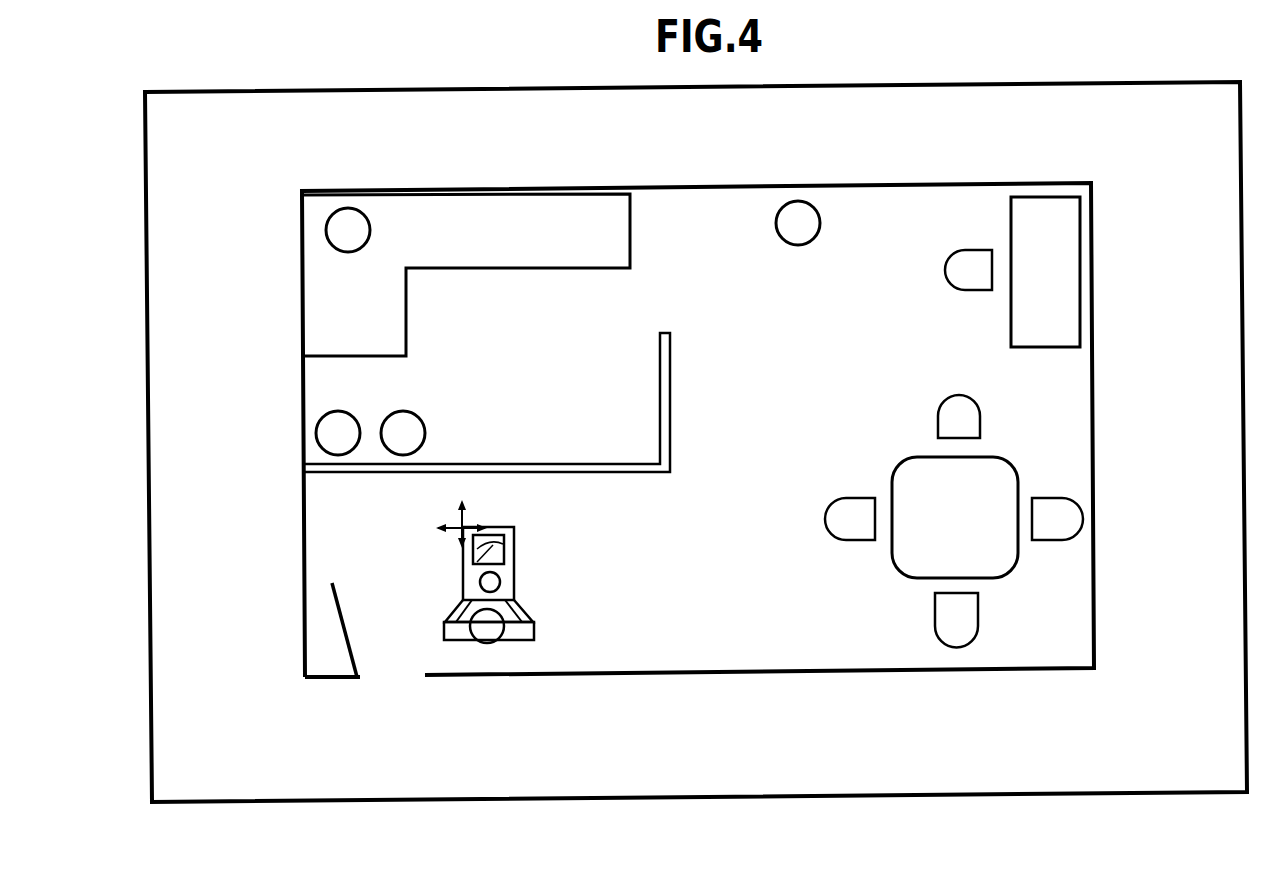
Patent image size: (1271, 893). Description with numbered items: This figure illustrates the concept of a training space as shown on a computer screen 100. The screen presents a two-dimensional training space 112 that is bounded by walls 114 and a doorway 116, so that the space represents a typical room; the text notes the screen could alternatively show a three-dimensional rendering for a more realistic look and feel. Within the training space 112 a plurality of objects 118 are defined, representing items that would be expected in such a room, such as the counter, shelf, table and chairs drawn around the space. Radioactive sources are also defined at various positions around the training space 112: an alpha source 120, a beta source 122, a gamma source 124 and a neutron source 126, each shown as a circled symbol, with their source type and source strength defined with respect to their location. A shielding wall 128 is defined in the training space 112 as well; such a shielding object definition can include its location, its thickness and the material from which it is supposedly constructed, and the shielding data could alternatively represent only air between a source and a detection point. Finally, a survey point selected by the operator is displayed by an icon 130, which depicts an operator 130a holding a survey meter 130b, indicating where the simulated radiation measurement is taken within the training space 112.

The computer screen 100 is at (150, 735).
The training space 112 is at (300, 213).
The walls 114 is at (838, 186).
The doorway 116 is at (375, 652).
The objects 118 is at (577, 238).
The alpha source 120 is at (370, 244).
The beta source 122 is at (820, 238).
The gamma source 124 is at (360, 412).
The neutron source 126 is at (425, 423).
The shielding wall 128 is at (616, 478).
The icon 130 is at (545, 598).
The operator 130a is at (530, 638).
The survey meter 130b is at (514, 546).